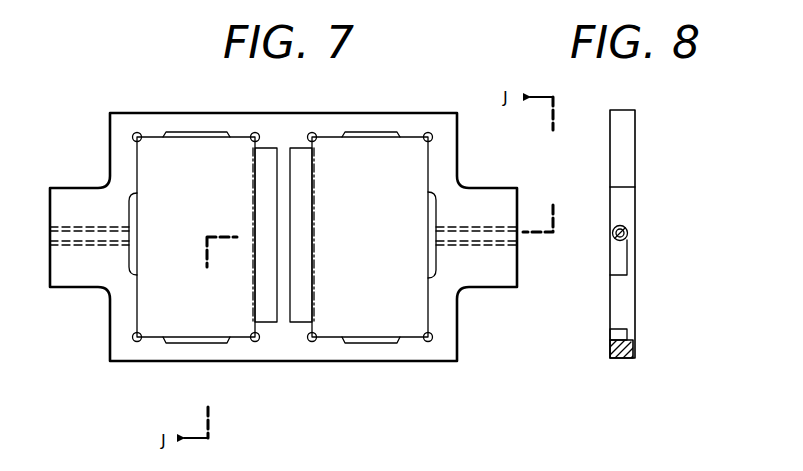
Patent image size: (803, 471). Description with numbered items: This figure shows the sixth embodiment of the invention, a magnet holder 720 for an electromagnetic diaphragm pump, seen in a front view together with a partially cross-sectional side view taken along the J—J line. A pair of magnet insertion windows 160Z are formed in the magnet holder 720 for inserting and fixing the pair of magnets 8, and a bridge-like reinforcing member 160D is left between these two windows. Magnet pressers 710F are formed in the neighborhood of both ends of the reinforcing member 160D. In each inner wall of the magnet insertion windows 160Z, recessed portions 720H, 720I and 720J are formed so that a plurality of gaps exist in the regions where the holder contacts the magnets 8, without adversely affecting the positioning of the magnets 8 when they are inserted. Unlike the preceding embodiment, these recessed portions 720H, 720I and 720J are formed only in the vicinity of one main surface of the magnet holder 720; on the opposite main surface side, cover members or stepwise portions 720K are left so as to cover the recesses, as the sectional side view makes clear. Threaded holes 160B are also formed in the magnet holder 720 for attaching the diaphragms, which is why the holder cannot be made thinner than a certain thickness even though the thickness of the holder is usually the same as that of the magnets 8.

In FIG. 7, the magnet holder 720 is at (385, 113).
In FIG. 8, the magnet holder 720 is at (626, 100).
In FIG. 7, the recessed portion 720H is at (203, 137).
In FIG. 8, the recessed portion 720H is at (612, 342).
In FIG. 7, the recessed portion 720J is at (253, 140).
In FIG. 8, the recessed portion 720J is at (610, 334).
In FIG. 7, the recessed portion 720I is at (132, 222).
In FIG. 8, the recessed portion 720I is at (610, 262).
In FIG. 7, the cover member or stepwise portion 720K is at (132, 245).
In FIG. 8, the cover member or stepwise portion 720K is at (635, 258).
In FIG. 7, the magnet presser 710F is at (258, 140).
In FIG. 7, the magnet insertion window 160Z is at (155, 337).
In FIG. 8, the magnet insertion window 160Z is at (614, 301).
In FIG. 7, the threaded hole 160B is at (82, 243).
In FIG. 8, the threaded hole 160B is at (630, 233).
In FIG. 7, the reinforcing member 160D is at (283, 290).
In FIG. 7, the magnet 8 is at (288, 300).